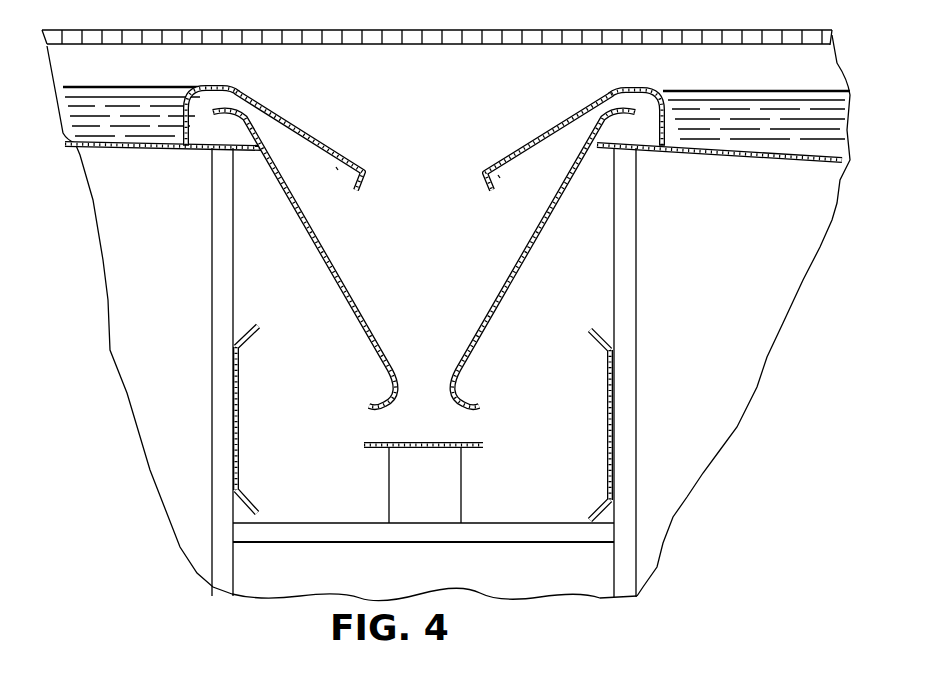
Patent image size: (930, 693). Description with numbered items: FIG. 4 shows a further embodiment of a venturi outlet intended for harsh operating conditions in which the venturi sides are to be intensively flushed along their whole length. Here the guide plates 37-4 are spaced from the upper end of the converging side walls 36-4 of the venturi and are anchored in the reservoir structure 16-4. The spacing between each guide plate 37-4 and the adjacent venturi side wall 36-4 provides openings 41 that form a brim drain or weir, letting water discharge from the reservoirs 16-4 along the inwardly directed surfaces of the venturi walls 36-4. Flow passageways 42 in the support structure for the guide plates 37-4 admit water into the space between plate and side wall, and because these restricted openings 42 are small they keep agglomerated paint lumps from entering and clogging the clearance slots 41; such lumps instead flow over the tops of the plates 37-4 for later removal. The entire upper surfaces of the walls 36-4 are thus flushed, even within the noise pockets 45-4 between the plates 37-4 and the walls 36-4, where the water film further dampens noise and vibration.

The reservoir structure 16-4 is at (127, 150).
The openings 41 is at (230, 93).
The flow passageways 42 is at (186, 146).
The guide plates 37-4 is at (307, 133).
The converging side walls 36-4 is at (312, 243).
The noise pockets 45-4 is at (336, 168).